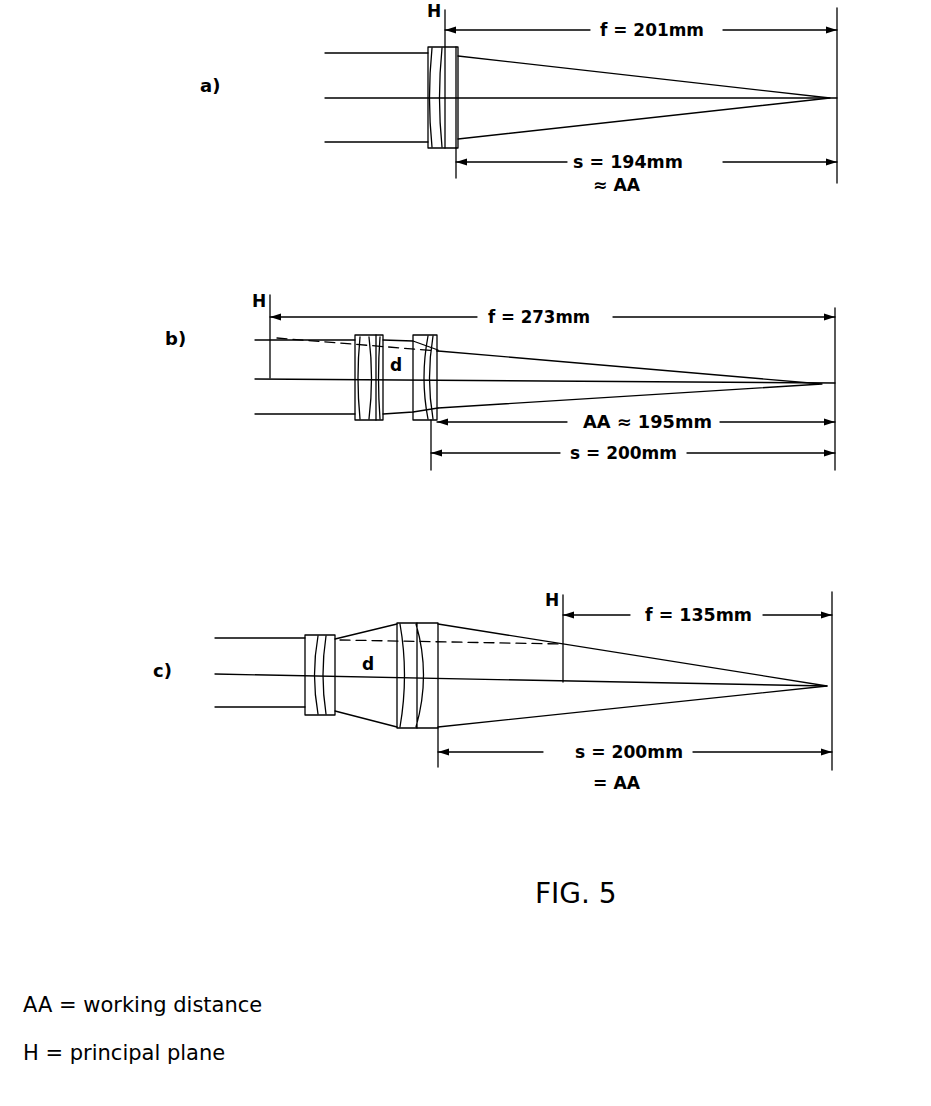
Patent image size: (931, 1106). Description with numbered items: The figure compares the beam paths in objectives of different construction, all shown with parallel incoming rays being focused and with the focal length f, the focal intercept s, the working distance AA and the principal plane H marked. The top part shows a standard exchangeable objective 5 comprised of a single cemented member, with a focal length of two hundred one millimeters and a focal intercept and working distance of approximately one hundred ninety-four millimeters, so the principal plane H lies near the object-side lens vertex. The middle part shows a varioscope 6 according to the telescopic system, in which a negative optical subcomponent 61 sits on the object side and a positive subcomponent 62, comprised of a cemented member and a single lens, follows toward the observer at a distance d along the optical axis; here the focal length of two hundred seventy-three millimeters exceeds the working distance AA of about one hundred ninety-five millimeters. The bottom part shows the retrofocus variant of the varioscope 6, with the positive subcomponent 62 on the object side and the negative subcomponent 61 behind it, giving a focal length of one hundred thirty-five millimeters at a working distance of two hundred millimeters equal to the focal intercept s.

The standard exchangeable objective 5 is at (443, 150).
The varioscope 6 is at (345, 431).
The negative optical subcomponent 61 is at (420, 421).
The positive optical subcomponent 62 is at (370, 421).